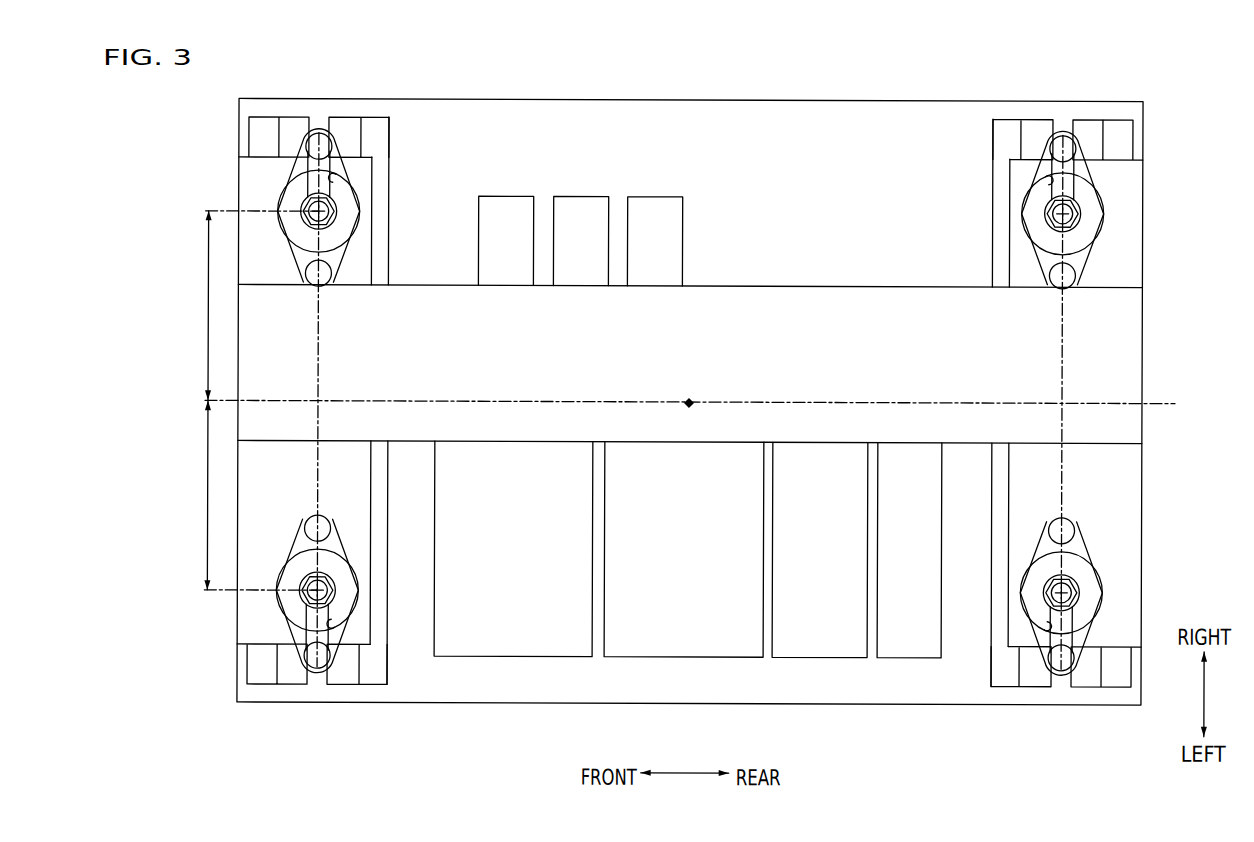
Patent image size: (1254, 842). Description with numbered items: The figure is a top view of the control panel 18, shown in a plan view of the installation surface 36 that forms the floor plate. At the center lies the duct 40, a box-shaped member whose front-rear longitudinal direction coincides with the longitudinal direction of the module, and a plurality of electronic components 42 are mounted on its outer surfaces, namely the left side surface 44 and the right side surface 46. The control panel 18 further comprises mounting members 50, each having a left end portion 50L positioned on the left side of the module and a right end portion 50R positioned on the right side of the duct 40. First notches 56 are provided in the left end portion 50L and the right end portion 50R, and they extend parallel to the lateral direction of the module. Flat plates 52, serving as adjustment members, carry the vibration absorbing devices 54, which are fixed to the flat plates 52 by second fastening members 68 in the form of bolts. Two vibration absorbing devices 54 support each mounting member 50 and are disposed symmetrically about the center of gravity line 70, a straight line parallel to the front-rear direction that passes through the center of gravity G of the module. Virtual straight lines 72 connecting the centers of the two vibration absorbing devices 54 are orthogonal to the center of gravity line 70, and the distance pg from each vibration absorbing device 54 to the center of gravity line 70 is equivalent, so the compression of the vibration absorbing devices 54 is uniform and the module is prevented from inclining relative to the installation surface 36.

The control panel 18 is at (222, 117).
The installation surface 36 is at (672, 700).
The duct 40 is at (760, 310).
The electronic components 42 is at (513, 658).
The left side surface 44 is at (972, 447).
The right side surface 46 is at (868, 284).
The mounting member 50 is at (370, 207).
The right end portion 50R is at (254, 190).
The left end portion 50L is at (252, 626).
The flat plate 52 is at (263, 123).
The vibration absorbing device 54 is at (338, 138).
The first notch 56 is at (333, 178).
The second fastening member 68 is at (306, 149).
The center of gravity line 70 is at (500, 401).
The virtual straight line 72 is at (322, 370).
The center of gravity G is at (691, 399).
The distance pg is at (257, 400).